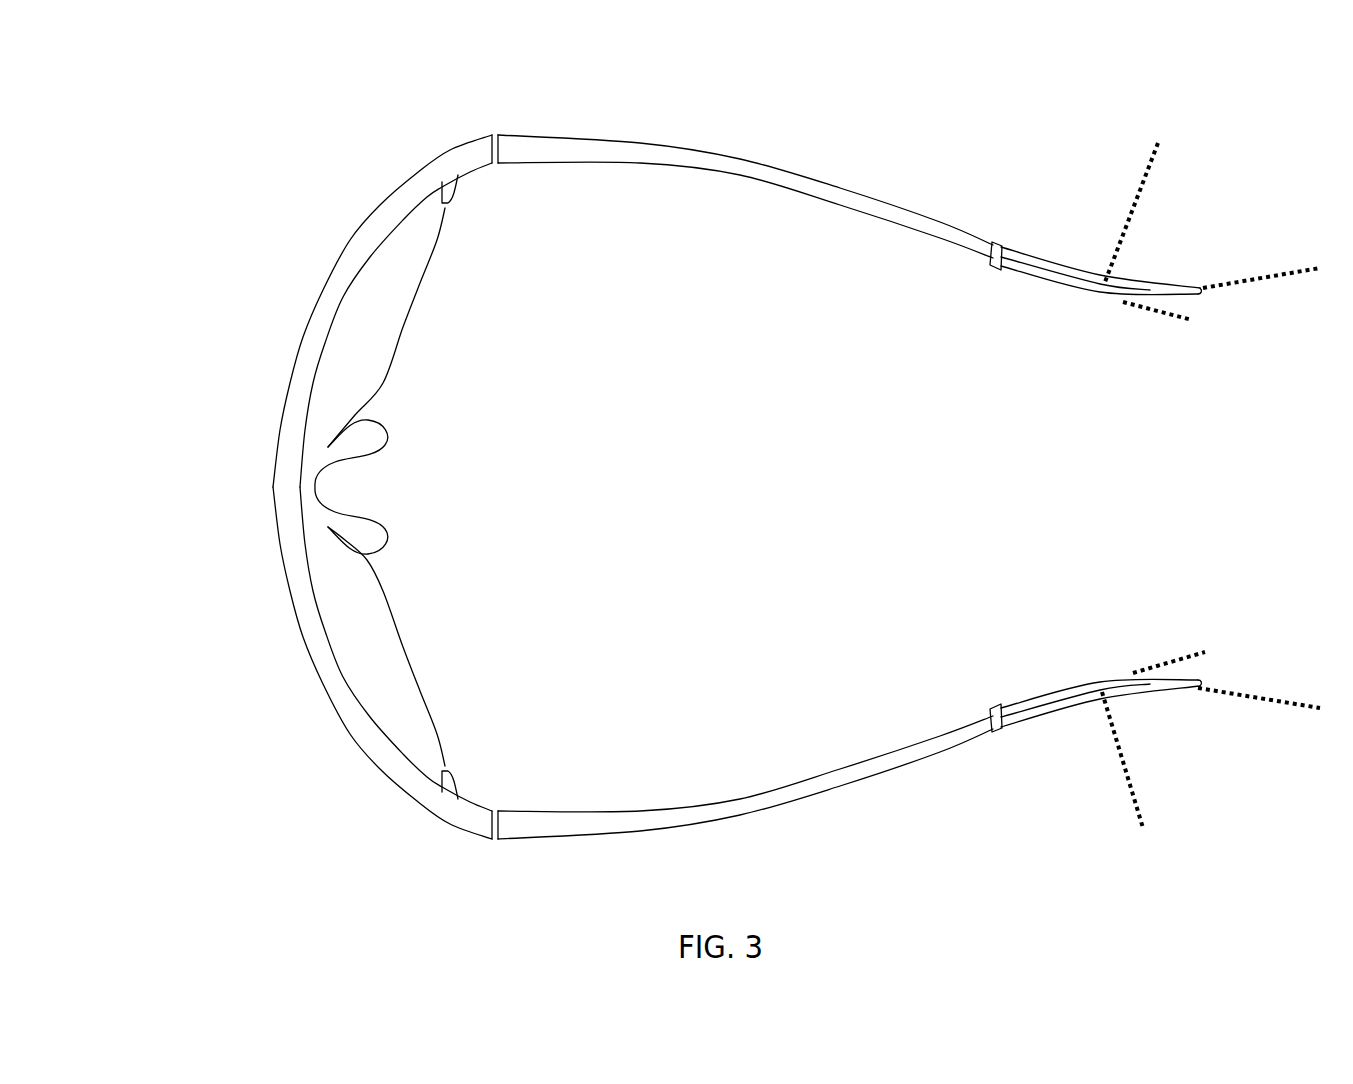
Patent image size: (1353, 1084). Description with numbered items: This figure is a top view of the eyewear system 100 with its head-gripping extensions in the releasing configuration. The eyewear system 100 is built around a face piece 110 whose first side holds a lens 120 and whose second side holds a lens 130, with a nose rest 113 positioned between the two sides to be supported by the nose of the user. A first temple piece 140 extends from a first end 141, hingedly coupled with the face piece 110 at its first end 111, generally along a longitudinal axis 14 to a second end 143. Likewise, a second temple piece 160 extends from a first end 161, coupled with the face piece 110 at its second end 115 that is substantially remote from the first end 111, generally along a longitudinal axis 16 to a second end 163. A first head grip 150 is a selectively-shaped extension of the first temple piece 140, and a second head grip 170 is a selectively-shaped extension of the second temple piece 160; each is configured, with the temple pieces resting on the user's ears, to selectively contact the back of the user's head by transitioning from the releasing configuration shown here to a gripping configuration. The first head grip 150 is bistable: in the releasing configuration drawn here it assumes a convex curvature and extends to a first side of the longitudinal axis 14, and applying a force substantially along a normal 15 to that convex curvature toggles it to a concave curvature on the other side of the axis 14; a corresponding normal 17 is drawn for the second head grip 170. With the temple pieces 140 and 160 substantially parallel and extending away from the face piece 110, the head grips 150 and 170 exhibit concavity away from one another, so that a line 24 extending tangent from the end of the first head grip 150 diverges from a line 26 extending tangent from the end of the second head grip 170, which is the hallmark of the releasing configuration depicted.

The eyewear system 100 is at (663, 503).
The face piece 110 is at (302, 500).
The first end of face piece 111 is at (415, 165).
The nose rest 113 is at (425, 480).
The second end of face piece 115 is at (412, 850).
The lens 120 is at (380, 323).
The lens 130 is at (408, 665).
The first temple piece 140 is at (871, 181).
The first end of first temple piece 141 is at (507, 163).
The second end of first temple piece 143 is at (924, 168).
The first head grip 150 is at (1177, 228).
The second temple piece 160 is at (869, 821).
The first end of second temple piece 161 is at (503, 838).
The second end of second temple piece 163 is at (925, 798).
The second head grip 170 is at (1166, 750).
The longitudinal axis 14 is at (1150, 350).
The normal 15 is at (1096, 230).
The longitudinal axis 16 is at (1157, 612).
The normal 17 is at (1090, 745).
The line tangent to first head grip 24 is at (1264, 320).
The line tangent to second head grip 26 is at (1270, 652).